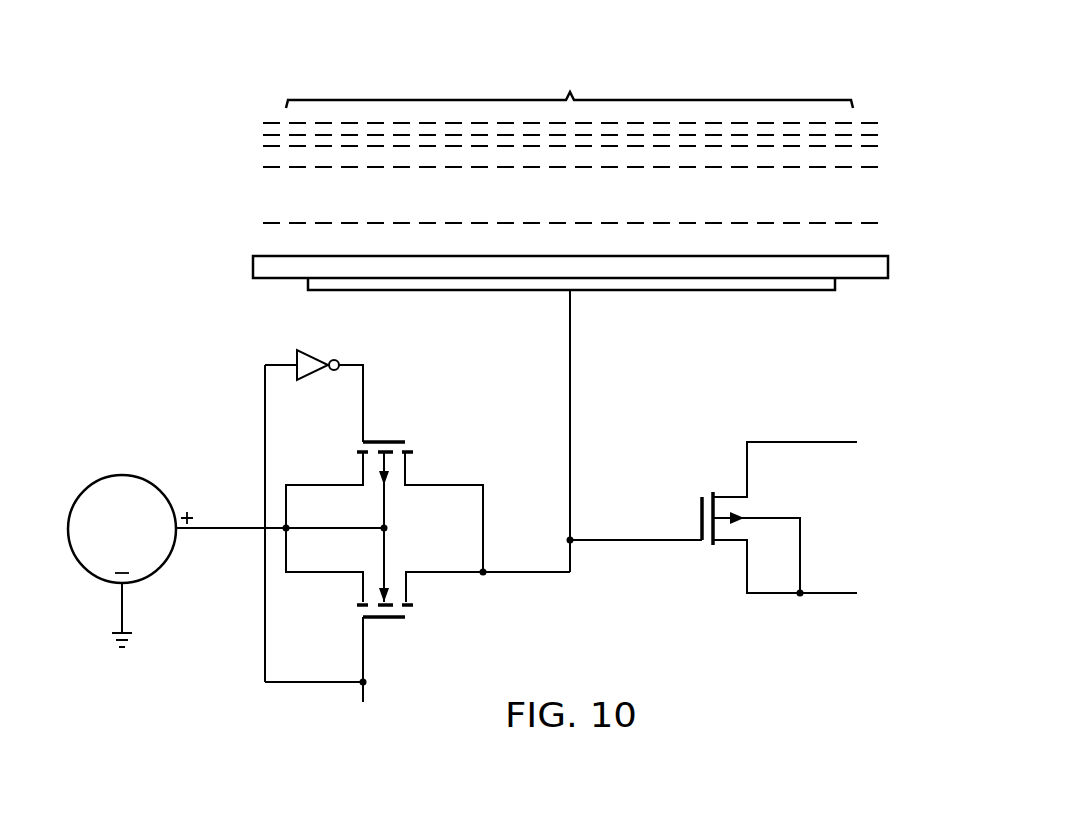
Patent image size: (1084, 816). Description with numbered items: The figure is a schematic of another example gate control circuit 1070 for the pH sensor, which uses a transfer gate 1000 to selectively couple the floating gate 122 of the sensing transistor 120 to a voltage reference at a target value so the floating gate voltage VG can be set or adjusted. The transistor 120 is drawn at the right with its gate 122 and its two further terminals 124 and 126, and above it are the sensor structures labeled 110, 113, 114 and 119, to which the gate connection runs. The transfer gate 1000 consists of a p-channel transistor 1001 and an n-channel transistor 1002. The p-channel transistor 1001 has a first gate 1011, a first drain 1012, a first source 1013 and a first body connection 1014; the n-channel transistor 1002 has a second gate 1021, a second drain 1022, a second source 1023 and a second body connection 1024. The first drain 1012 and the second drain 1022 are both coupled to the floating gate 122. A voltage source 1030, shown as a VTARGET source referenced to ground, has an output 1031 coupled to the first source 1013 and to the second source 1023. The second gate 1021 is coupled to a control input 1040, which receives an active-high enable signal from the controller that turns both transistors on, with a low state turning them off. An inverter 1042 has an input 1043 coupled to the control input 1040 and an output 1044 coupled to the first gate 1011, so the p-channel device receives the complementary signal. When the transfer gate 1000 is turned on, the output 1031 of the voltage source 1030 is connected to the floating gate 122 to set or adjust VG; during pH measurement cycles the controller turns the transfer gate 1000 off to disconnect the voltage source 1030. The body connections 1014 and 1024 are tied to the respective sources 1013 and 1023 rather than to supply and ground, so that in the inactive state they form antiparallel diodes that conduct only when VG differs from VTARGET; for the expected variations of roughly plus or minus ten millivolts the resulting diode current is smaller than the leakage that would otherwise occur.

The electrode plate 110 is at (647, 292).
The plate 113 is at (253, 266).
The layer 114 is at (590, 207).
The stack of layers 119 is at (570, 115).
The transistor 120 is at (677, 557).
The floating gate 122 is at (680, 537).
The drain 124 is at (745, 470).
The source 126 is at (745, 567).
The transfer gate 1000 is at (213, 405).
The p-channel transistor 1001 is at (427, 435).
The n-channel transistor 1002 is at (427, 627).
The first gate 1011 is at (363, 418).
The first drain 1012 is at (407, 468).
The first source 1013 is at (360, 467).
The first body connection 1014 is at (387, 495).
The second gate 1021 is at (360, 638).
The second drain 1022 is at (408, 590).
The second source 1023 is at (360, 590).
The second body connection 1024 is at (383, 562).
The voltage source 1030 is at (92, 578).
The output 1031 is at (232, 527).
The control input 1040 is at (362, 693).
The inverter 1042 is at (317, 355).
The input 1043 is at (282, 363).
The output 1044 is at (365, 377).
The gate control circuit 1070 is at (108, 312).